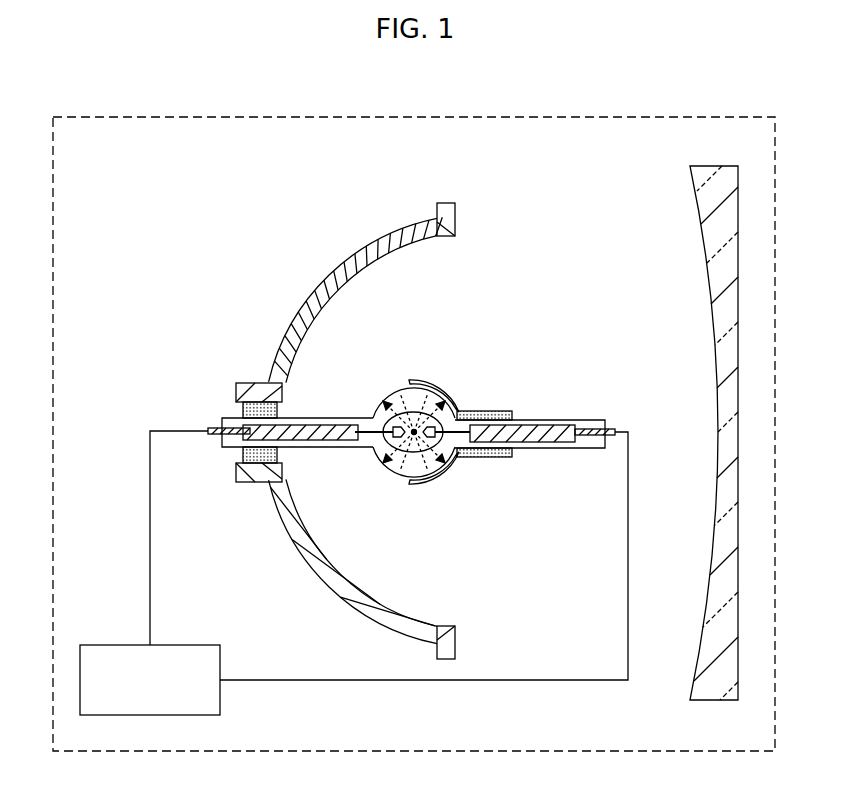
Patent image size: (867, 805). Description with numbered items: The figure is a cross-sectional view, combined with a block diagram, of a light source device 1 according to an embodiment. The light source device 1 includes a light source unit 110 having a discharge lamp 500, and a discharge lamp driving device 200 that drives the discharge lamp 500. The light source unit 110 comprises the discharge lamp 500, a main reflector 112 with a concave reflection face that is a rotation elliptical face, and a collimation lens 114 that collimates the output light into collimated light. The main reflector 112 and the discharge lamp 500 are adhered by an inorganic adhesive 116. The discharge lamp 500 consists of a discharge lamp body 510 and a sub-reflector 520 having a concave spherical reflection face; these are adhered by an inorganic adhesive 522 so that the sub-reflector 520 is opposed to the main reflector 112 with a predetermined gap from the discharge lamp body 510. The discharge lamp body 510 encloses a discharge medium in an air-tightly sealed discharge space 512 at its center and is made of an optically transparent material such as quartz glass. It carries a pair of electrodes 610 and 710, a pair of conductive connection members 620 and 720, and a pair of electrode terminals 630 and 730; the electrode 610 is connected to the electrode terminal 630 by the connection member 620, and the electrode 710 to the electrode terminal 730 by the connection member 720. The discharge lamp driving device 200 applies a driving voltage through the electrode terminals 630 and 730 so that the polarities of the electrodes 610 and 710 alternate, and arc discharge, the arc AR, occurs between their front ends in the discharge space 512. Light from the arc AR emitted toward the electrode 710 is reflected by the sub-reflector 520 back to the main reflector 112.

The light source device 1 is at (620, 110).
The light source unit 110 is at (276, 217).
The main reflector 112 is at (378, 257).
The collimation lens 114 is at (708, 200).
The inorganic adhesive 116 is at (243, 408).
The discharge lamp driving device 200 is at (193, 646).
The discharge lamp 500 is at (532, 335).
The discharge lamp body 510 is at (404, 393).
The discharge space 512 is at (414, 464).
The sub-reflector 520 is at (440, 474).
The inorganic adhesive 522 is at (512, 457).
The electrode 610 is at (395, 441).
The connection member 620 is at (321, 428).
The electrode terminal 630 is at (215, 428).
The electrode 710 is at (449, 403).
The connection member 720 is at (547, 432).
The electrode terminal 730 is at (597, 429).
The arc AR is at (420, 398).